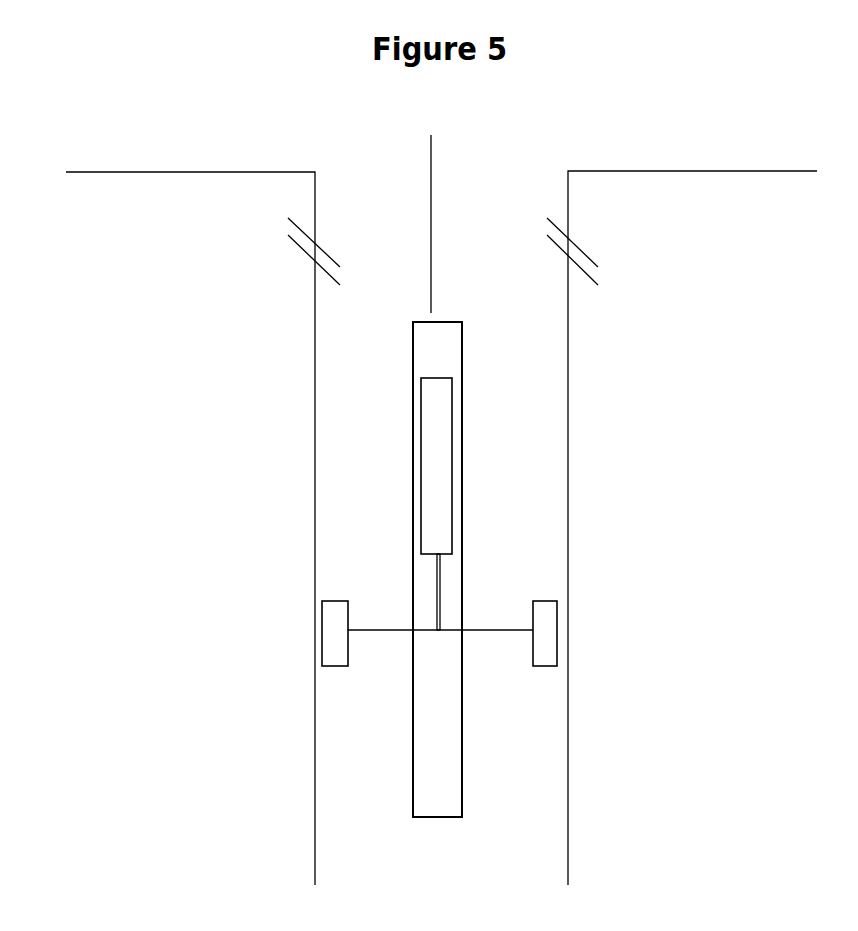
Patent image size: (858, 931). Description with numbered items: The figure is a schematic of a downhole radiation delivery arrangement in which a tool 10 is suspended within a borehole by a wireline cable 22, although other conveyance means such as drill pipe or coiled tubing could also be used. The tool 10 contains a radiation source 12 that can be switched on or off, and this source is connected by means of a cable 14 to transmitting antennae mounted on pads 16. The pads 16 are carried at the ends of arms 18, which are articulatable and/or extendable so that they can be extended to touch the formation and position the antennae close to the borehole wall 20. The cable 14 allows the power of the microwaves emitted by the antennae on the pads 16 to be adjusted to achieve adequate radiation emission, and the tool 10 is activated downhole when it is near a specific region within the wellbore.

The tool 10 is at (467, 757).
The radiation source 12 is at (422, 438).
The cable 14 is at (432, 585).
The pads 16 is at (322, 647).
The arms 18 is at (482, 633).
The borehole wall 20 is at (572, 335).
The wireline cable 22 is at (432, 195).